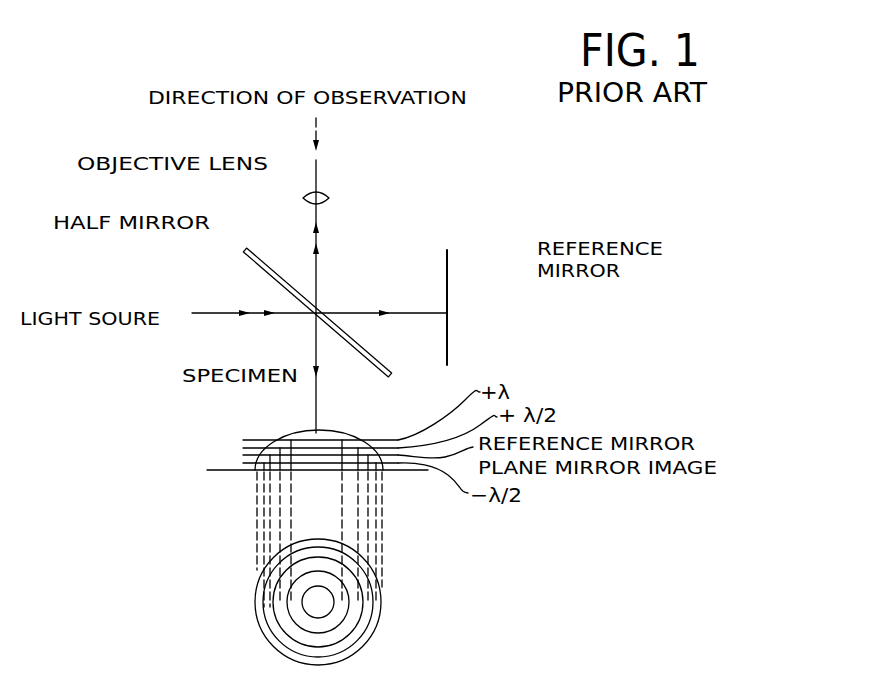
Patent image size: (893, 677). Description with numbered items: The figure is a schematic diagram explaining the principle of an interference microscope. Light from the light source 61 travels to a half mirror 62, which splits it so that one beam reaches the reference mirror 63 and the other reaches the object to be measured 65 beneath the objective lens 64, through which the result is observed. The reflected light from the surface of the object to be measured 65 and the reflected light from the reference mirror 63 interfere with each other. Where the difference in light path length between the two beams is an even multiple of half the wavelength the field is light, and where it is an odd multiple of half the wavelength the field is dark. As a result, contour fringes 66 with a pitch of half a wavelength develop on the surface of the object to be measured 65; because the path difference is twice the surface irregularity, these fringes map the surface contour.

The light source 61 is at (192, 313).
The half mirror 62 is at (244, 251).
The reference mirror 63 is at (447, 252).
The objective lens 64 is at (303, 198).
The object to be measured 65 is at (309, 433).
The contour fringes 66 is at (380, 609).